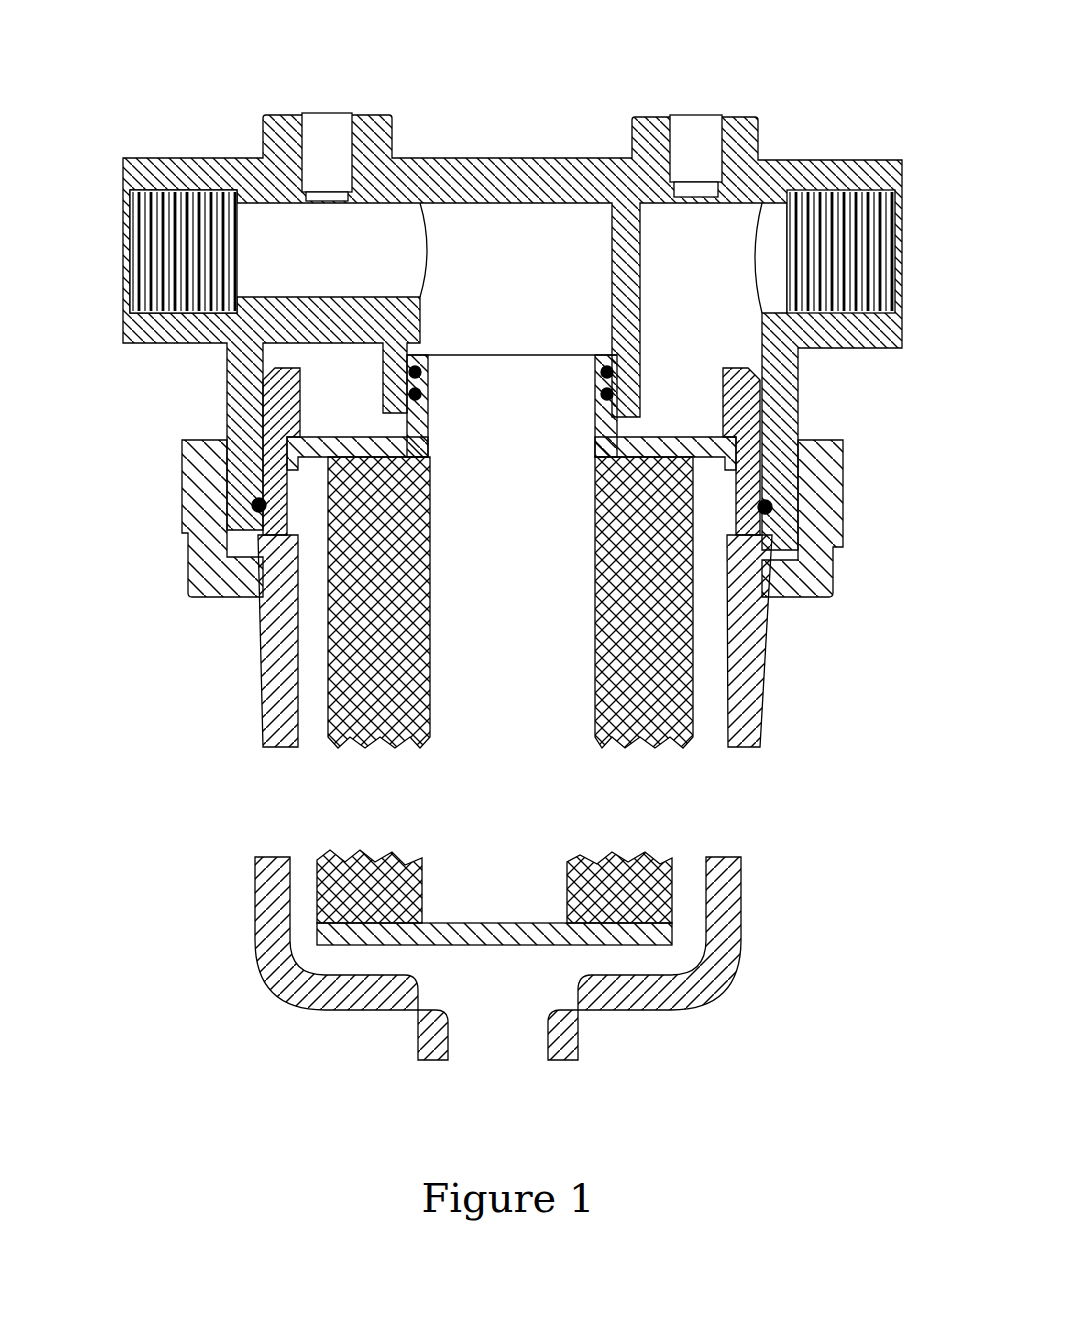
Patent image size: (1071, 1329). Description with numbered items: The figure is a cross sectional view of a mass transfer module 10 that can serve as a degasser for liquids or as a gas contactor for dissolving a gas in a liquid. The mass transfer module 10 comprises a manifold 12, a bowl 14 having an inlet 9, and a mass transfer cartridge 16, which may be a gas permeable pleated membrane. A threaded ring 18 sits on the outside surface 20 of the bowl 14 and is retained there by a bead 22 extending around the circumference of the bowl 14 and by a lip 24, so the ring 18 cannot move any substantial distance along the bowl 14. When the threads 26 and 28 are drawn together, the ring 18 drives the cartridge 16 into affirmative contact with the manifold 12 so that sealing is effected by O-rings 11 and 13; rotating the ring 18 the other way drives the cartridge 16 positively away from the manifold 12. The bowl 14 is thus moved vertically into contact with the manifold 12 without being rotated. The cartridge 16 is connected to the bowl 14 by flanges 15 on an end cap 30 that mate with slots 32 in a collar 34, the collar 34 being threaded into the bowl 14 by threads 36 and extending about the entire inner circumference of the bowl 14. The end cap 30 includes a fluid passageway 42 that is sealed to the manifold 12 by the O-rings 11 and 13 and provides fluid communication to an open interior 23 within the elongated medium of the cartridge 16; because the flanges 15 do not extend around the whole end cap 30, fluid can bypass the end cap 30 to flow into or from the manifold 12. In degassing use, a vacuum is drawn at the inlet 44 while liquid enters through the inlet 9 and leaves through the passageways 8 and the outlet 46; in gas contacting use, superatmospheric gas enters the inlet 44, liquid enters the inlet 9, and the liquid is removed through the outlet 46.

The passageways 8 is at (710, 632).
The inlet 9 is at (440, 1025).
The mass transfer module 10 is at (517, 381).
The O-ring 11 is at (596, 370).
The manifold 12 is at (788, 166).
The O-ring 13 is at (598, 395).
The bowl 14 is at (747, 685).
The flanges 15 is at (227, 392).
The mass transfer cartridge 16 is at (550, 552).
The threaded ring 18 is at (843, 444).
The outside surface 20 is at (263, 600).
The bead 22 is at (253, 610).
The open interior 23 is at (600, 645).
The lip 24 is at (835, 550).
The threads 26 is at (182, 460).
The threads 28 is at (187, 438).
The end cap 30 is at (660, 437).
The slots 32 is at (318, 438).
The collar 34 is at (745, 372).
The threads 36 is at (293, 508).
The fluid passageway 42 is at (483, 358).
The inlet 44 is at (177, 257).
The outlet 46 is at (852, 260).